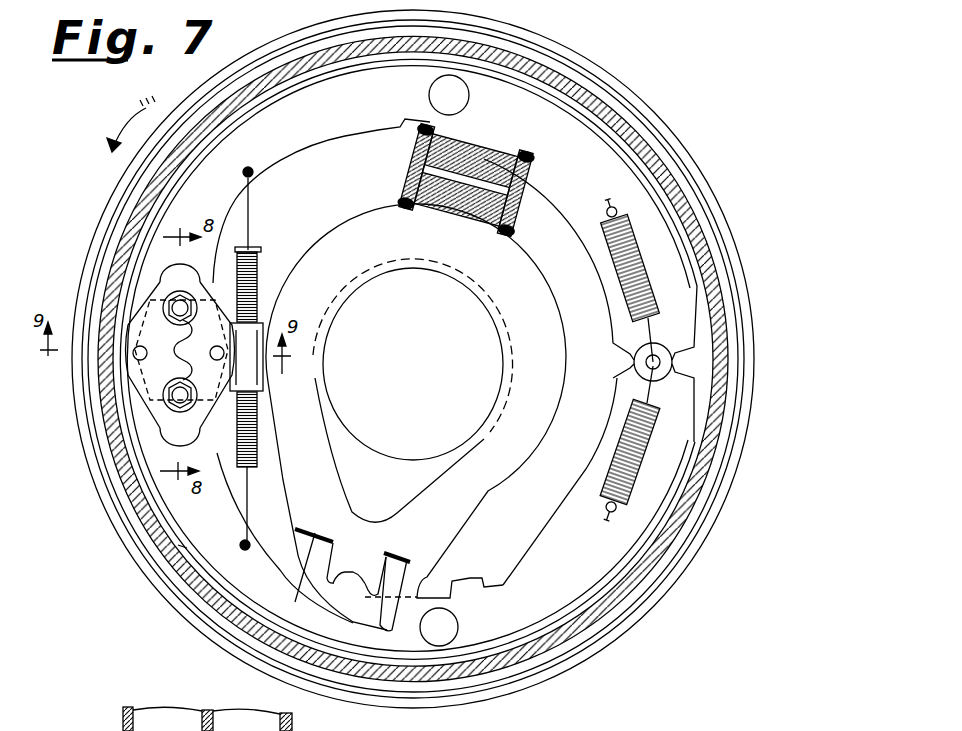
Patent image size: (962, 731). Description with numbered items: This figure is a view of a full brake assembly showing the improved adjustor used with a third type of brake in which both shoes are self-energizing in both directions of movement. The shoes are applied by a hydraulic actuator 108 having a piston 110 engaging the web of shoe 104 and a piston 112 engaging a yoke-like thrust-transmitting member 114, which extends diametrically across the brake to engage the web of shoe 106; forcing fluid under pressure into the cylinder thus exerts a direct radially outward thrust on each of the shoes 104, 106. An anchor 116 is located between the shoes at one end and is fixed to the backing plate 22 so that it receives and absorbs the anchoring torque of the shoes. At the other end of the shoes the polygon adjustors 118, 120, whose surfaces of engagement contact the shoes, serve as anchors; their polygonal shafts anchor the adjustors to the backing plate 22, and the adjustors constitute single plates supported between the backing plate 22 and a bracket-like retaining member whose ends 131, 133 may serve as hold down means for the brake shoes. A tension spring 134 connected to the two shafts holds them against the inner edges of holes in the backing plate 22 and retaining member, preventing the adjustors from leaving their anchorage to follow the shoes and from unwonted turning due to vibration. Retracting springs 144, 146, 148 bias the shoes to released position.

The backing plate 22 is at (542, 533).
The shoe 104 is at (512, 100).
The shoe 106 is at (502, 625).
The hydraulic actuator 108 is at (520, 203).
The piston 110 is at (512, 147).
The piston 112 is at (405, 186).
The yoke-like thrust-transmitting member 114 is at (458, 507).
The anchor 116 is at (634, 362).
The polygon adjustor 118 is at (140, 303).
The polygon adjustor 120 is at (133, 398).
The end of retaining member 131 is at (170, 273).
The end of retaining member 133 is at (172, 433).
The tension spring 134 is at (173, 368).
The retracting spring 144 is at (618, 275).
The retracting spring 146 is at (620, 433).
The retracting spring 148 is at (258, 262).